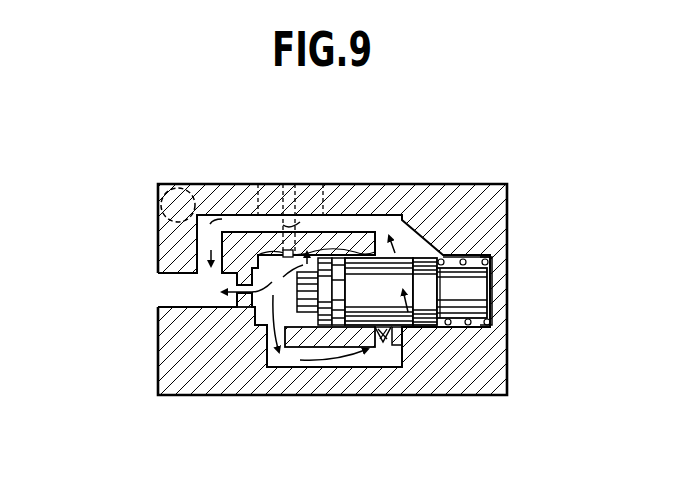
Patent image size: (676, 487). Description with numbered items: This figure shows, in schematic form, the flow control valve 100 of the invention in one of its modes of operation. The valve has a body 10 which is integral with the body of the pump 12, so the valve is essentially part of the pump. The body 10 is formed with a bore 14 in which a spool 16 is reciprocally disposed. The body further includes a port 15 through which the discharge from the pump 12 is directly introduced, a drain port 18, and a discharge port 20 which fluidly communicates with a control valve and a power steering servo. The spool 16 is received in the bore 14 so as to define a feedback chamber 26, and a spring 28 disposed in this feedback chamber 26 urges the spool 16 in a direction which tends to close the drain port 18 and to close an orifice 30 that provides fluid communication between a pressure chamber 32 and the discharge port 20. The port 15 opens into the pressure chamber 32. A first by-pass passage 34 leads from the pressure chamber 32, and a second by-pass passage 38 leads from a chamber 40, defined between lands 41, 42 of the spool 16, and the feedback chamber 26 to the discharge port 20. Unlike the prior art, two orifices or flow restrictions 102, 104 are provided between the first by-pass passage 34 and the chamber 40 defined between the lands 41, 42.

The flow control valve 100 is at (141, 151).
The body 10 is at (505, 380).
The pump 12 is at (178, 189).
The bore 14 is at (480, 330).
The port 15 is at (268, 184).
The spool 16 is at (468, 333).
The drain port 18 is at (305, 184).
The discharge port 20 is at (165, 290).
The feedback chamber 26 is at (430, 302).
The spring 28 is at (493, 262).
The orifice 30 is at (246, 297).
The pressure chamber 32 is at (256, 320).
The first by-pass passage 34 is at (293, 360).
The second by-pass passage 38 is at (358, 198).
The chamber 40 is at (401, 256).
The land 41 is at (464, 291).
The land 42 is at (445, 311).
The orifice 102 is at (385, 334).
The orifice 104 is at (396, 336).